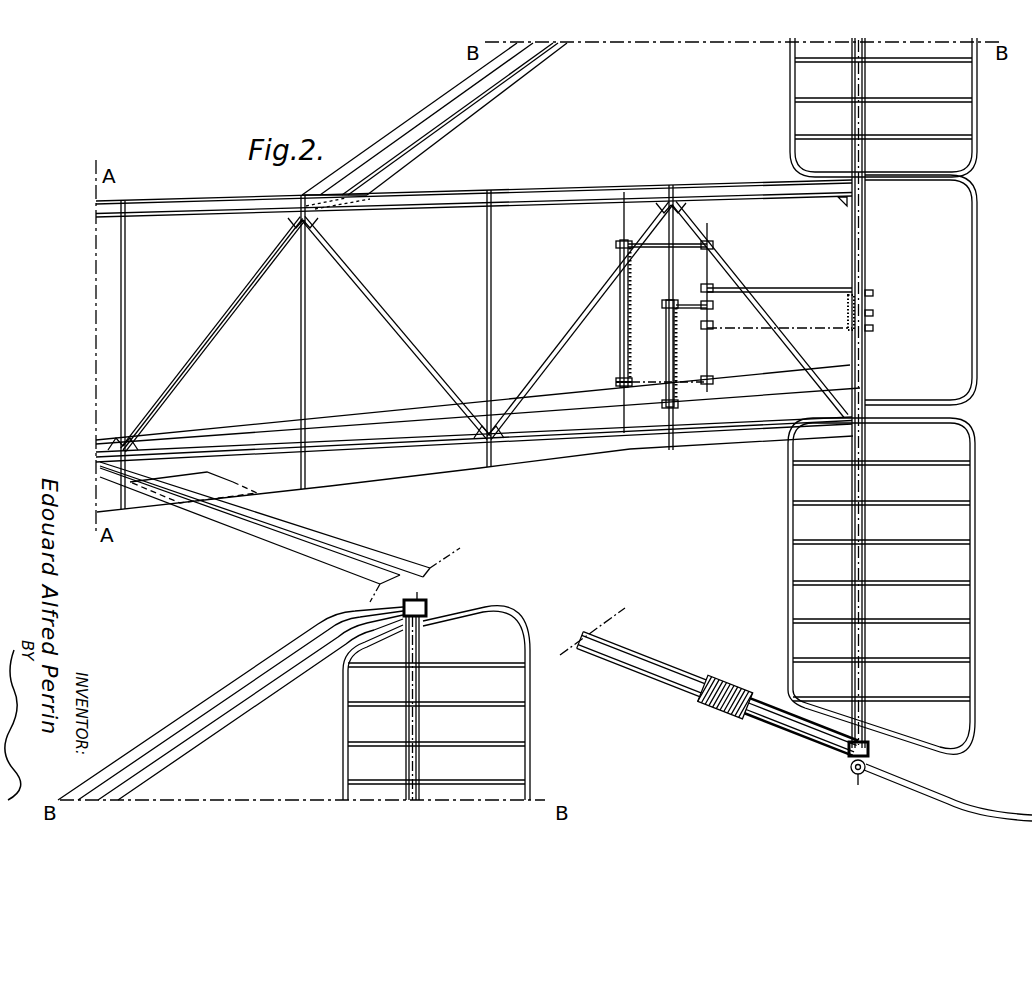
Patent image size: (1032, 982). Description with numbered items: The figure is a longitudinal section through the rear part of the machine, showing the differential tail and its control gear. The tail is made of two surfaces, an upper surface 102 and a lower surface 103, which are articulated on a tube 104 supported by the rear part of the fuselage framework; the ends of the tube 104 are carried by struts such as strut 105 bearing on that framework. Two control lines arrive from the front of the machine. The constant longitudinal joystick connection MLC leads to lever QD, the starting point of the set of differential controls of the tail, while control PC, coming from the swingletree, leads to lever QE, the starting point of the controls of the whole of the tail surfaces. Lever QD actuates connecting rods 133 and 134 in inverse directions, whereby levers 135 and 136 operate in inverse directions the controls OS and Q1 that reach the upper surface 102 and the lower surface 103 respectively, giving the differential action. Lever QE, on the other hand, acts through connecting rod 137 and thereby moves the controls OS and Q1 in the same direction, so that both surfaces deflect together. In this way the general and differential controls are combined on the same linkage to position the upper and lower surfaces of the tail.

The upper surface 102 is at (808, 52).
The lower surface 103 is at (808, 525).
The tube 104 is at (865, 240).
The strut 105 is at (230, 714).
The connecting rod 133 is at (700, 385).
The connecting rod 134 is at (660, 248).
The lever 135 is at (713, 245).
The lever 136 is at (712, 330).
The connecting rod 137 is at (695, 310).
The lever (starting point of the general tail controls) QE is at (643, 332).
The lever (starting point of the differential tail controls) QD is at (664, 308).
The control of the upper surface (QS) OS is at (803, 288).
The control of the lower surface (QI) Q1 is at (825, 328).
The constant longitudinal joystick control (MIC) MLC is at (415, 410).
The control PC (swingletree constant connection) PC is at (437, 422).